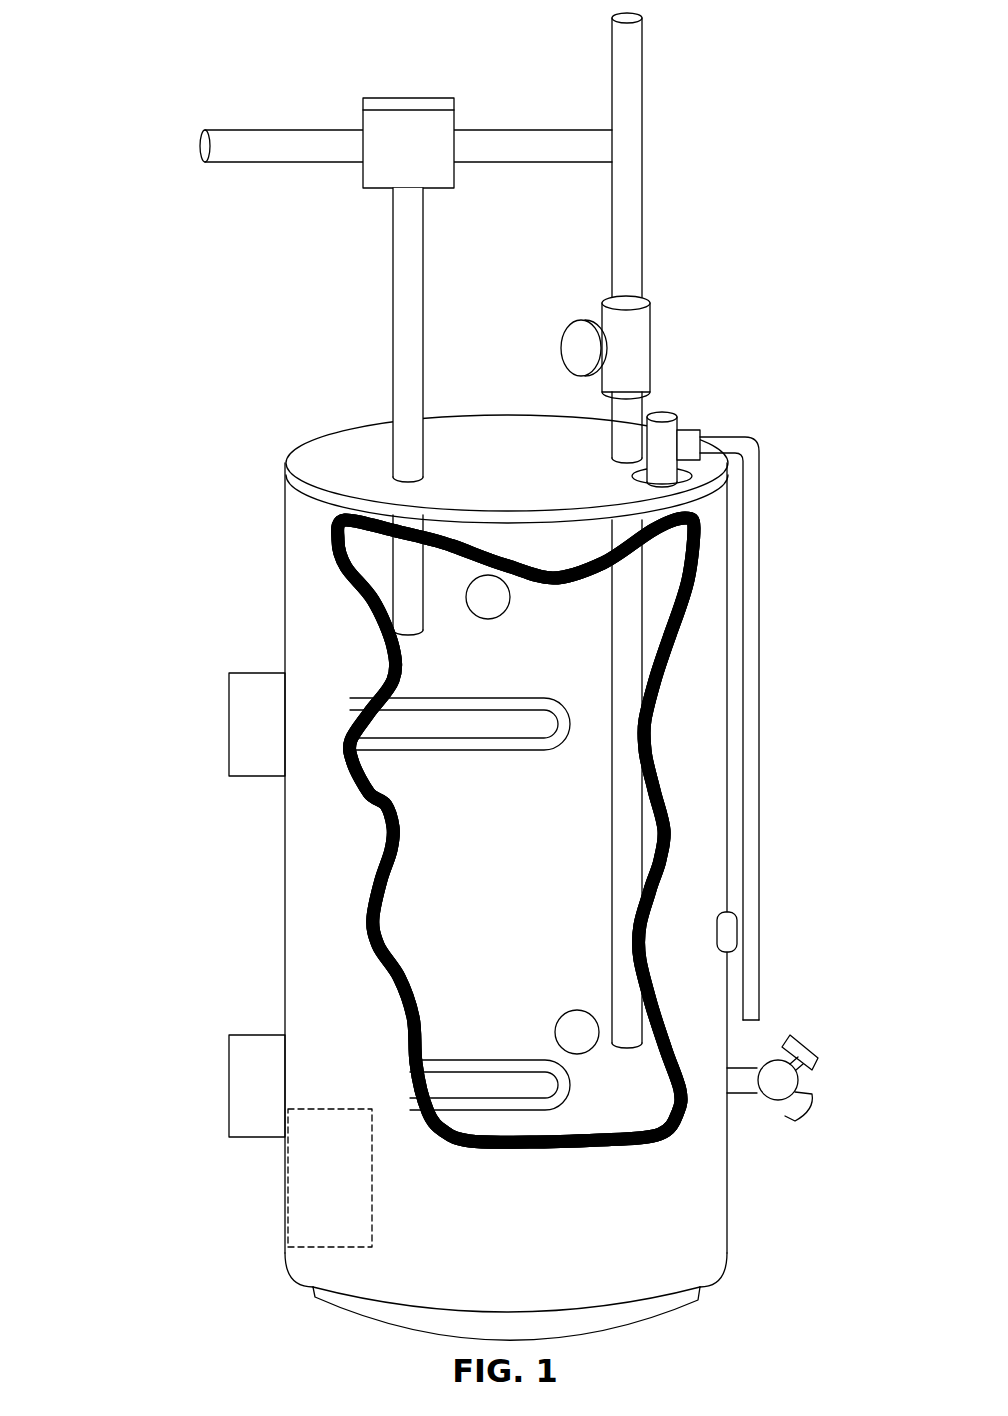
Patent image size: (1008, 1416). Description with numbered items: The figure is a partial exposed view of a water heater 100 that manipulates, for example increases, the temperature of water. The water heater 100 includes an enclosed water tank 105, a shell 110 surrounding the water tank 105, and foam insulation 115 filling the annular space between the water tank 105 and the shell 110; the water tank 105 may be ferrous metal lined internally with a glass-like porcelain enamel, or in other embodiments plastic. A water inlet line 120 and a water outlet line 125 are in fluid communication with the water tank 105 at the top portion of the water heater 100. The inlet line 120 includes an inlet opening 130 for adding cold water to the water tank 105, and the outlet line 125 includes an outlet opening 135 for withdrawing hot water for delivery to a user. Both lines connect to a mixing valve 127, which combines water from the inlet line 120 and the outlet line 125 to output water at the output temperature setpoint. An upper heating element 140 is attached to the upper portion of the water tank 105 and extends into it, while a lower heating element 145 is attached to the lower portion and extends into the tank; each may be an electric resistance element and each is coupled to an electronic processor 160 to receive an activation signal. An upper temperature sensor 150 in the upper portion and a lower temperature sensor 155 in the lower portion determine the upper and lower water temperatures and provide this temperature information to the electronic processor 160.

The water heater 100 is at (466, 676).
The water tank 105 is at (663, 592).
The shell 110 is at (730, 723).
The foam insulation 115 is at (663, 885).
The water inlet line 120 is at (637, 235).
The water outlet line 125 is at (405, 358).
The mixing valve 127 is at (406, 143).
The inlet opening 130 is at (625, 1045).
The outlet opening 135 is at (408, 632).
The upper heating element 140 is at (420, 752).
The lower heating element 145 is at (437, 1058).
The upper temperature sensor 150 is at (510, 597).
The lower temperature sensor 155 is at (575, 1008).
The electronic processor 160 is at (300, 1208).